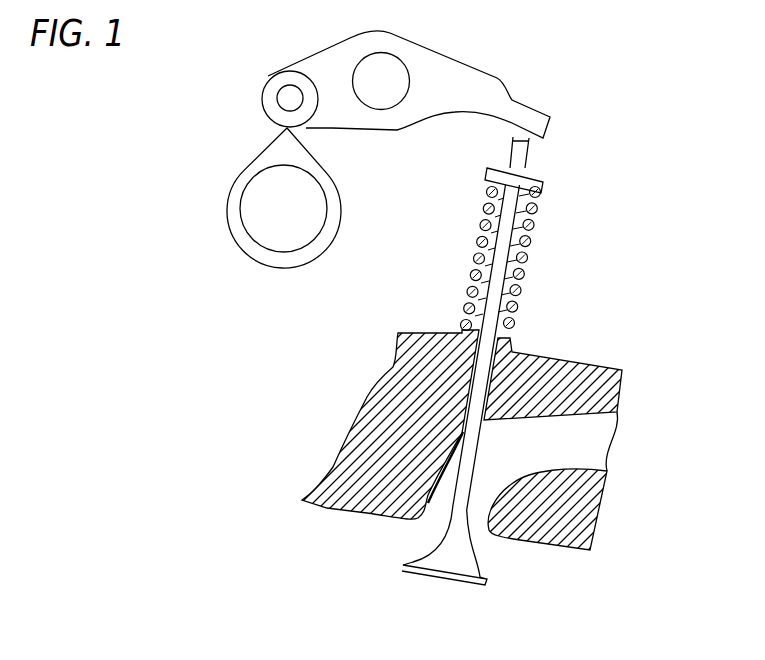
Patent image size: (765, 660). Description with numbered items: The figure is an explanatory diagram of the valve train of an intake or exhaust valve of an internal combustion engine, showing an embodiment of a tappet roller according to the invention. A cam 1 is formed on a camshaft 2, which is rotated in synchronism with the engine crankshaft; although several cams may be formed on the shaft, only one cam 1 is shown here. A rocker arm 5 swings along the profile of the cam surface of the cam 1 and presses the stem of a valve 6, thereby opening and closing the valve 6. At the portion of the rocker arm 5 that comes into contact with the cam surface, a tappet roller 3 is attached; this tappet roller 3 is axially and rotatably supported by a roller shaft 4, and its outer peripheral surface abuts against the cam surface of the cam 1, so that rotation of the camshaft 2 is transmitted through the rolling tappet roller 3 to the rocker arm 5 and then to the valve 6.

The cam 1 is at (267, 153).
The camshaft 2 is at (250, 208).
The tappet roller 3 is at (266, 104).
The roller shaft 4 is at (290, 92).
The rocker arm 5 is at (455, 68).
The valve 6 is at (453, 538).